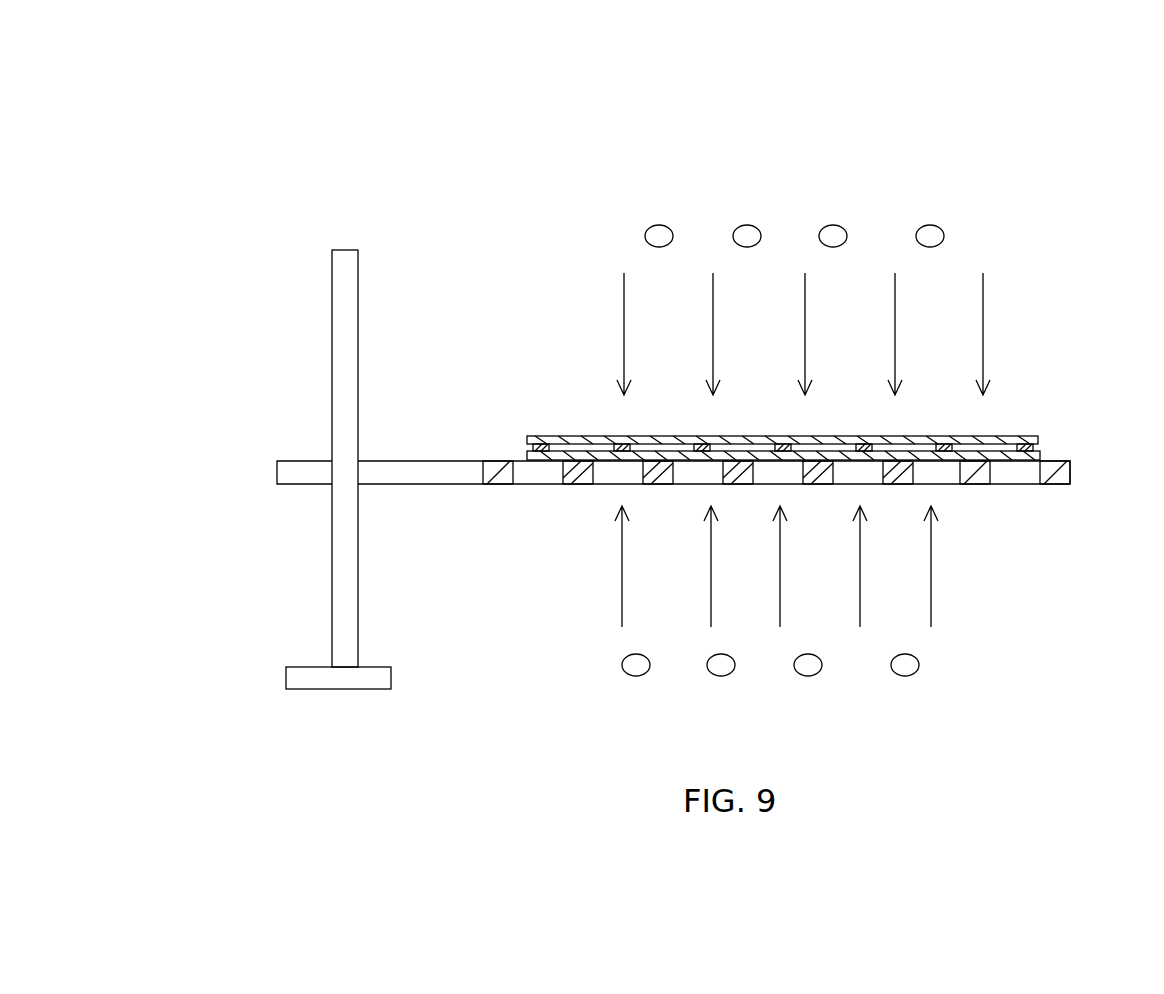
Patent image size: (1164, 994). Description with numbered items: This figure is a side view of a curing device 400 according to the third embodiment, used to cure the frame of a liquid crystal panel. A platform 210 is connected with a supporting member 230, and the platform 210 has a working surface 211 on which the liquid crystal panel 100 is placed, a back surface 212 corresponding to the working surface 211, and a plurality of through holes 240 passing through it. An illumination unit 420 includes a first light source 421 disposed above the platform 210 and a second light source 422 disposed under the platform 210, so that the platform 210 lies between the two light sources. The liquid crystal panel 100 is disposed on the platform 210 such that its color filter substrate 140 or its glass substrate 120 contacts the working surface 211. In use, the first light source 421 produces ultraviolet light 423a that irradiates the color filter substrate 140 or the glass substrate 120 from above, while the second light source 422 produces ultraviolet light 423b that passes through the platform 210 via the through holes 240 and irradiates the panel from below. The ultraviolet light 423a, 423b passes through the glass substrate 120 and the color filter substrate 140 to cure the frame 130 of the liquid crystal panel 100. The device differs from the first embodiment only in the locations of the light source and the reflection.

The liquid crystal panel 100 is at (839, 453).
The glass substrate 120 is at (1038, 440).
The frame 130 is at (1025, 452).
The color filter substrate 140 is at (1041, 456).
The platform 210 is at (985, 476).
The working surface 211 is at (655, 487).
The back surface 212 is at (668, 487).
The supporting member 230 is at (398, 487).
The through holes 240 is at (945, 495).
The curing device 400 is at (341, 155).
The illumination unit 420 is at (937, 221).
The first light source 421 is at (840, 222).
The second light source 422 is at (918, 675).
The ultraviolet light 423a is at (991, 318).
The ultraviolet light 423b is at (950, 602).